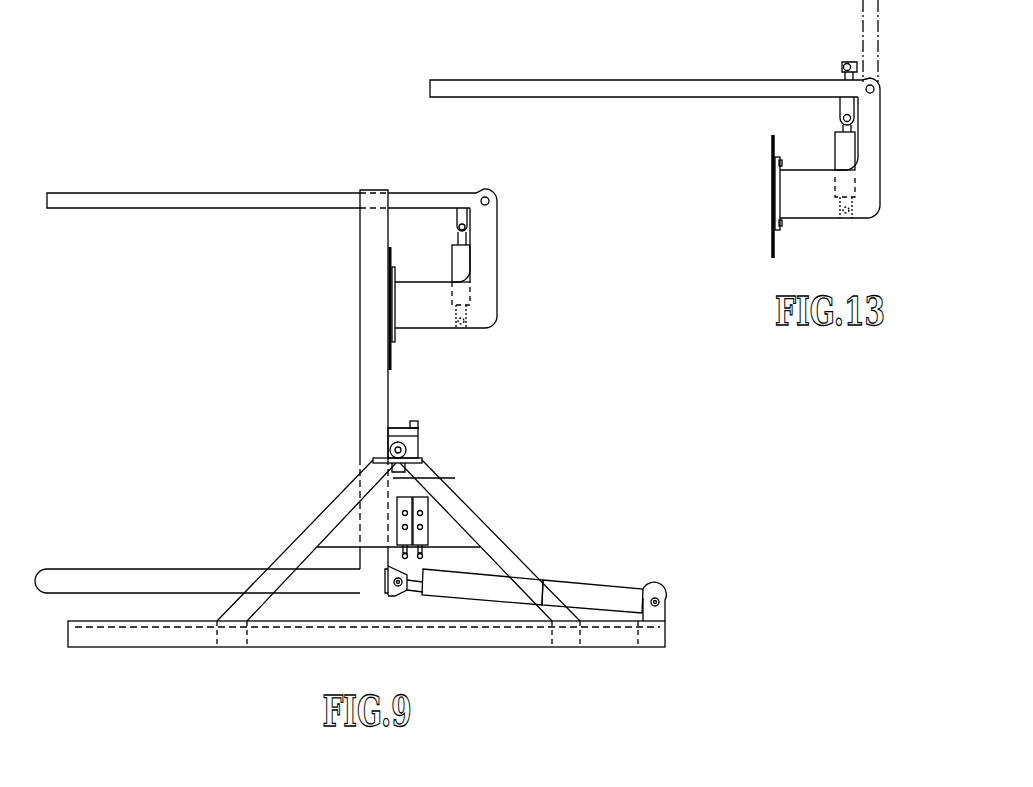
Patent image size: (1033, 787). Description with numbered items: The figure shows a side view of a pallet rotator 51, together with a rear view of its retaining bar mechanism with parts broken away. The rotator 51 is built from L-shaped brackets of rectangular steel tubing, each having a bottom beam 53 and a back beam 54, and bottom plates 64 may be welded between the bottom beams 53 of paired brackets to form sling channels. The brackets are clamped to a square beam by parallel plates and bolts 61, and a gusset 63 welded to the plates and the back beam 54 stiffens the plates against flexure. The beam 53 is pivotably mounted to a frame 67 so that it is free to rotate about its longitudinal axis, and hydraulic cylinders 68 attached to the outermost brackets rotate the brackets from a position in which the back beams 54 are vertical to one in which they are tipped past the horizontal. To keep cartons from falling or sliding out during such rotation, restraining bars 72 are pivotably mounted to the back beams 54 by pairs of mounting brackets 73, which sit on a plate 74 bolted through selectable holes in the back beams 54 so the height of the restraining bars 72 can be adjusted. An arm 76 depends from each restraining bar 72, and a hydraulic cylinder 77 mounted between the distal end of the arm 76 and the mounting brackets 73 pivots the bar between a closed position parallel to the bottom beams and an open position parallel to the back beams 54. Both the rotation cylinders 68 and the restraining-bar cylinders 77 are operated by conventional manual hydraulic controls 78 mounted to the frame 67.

In FIG. 9, the rotator 51 is at (230, 368).
In FIG. 9, the bottom beam 53 is at (205, 580).
In FIG. 9, the back beam 54 is at (380, 225).
In FIG. 9, the bolt 61 is at (415, 442).
In FIG. 9, the gusset 63 is at (395, 480).
In FIG. 9, the bottom plate 64 is at (392, 422).
In FIG. 9, the frame 67 is at (527, 632).
In FIG. 9, the hydraulic cylinder 68 is at (600, 585).
In FIG. 9, the restraining bar 72 is at (317, 200).
In FIG. 13, the restraining bar 72 is at (742, 87).
In FIG. 9, the mounting bracket 73 is at (432, 323).
In FIG. 13, the mounting bracket 73 is at (813, 210).
In FIG. 9, the plate 74 is at (395, 360).
In FIG. 13, the plate 74 is at (772, 150).
In FIG. 9, the arm 76 is at (462, 218).
In FIG. 13, the arm 76 is at (857, 65).
In FIG. 9, the hydraulic cylinder 77 is at (463, 262).
In FIG. 13, the hydraulic cylinder 77 is at (840, 145).
In FIG. 9, the manual hydraulic controls 78 is at (422, 535).